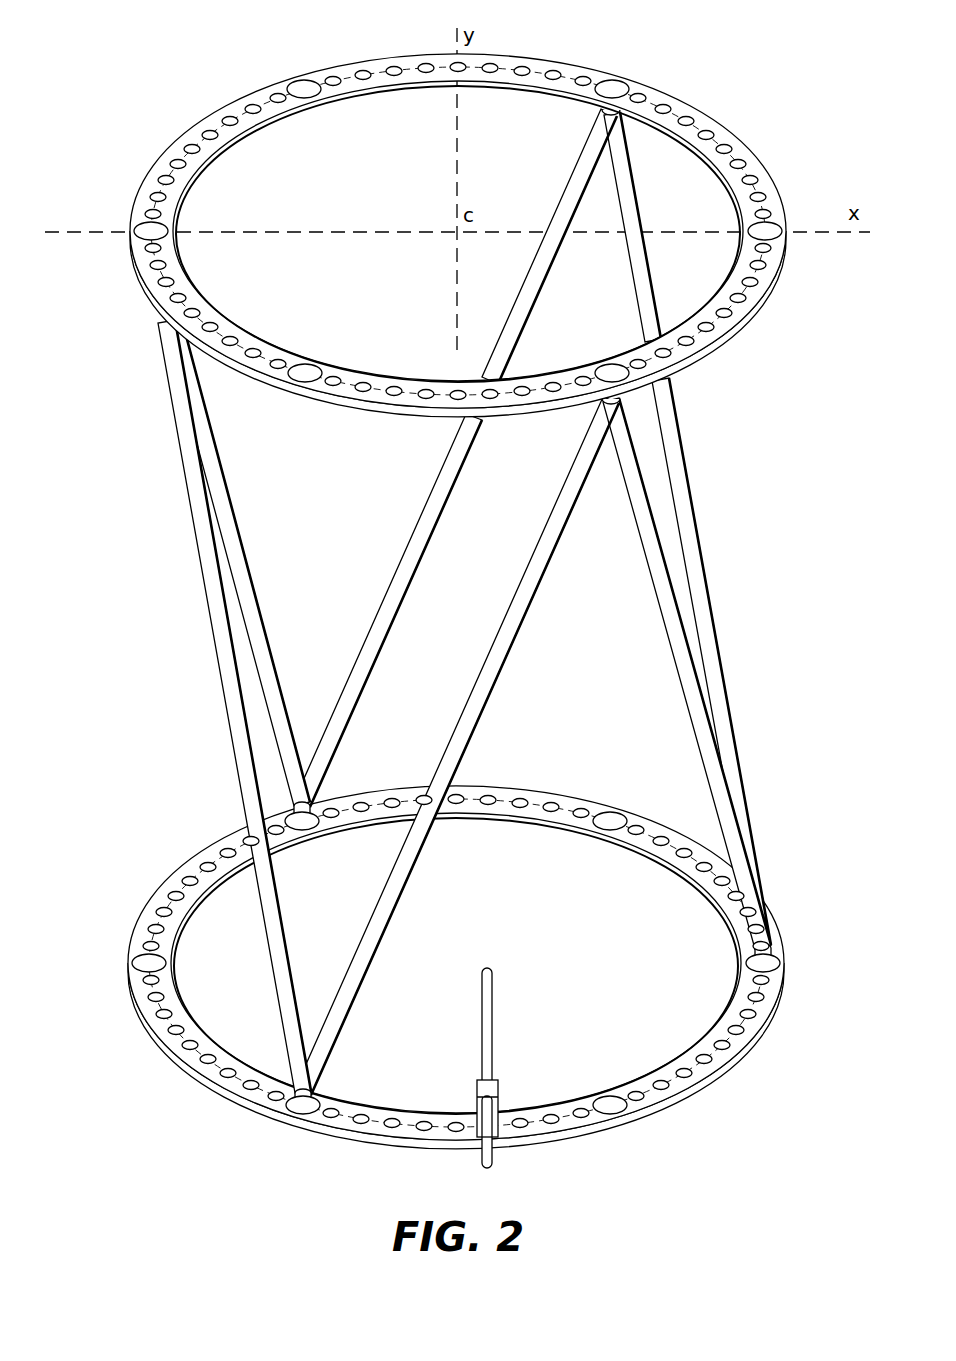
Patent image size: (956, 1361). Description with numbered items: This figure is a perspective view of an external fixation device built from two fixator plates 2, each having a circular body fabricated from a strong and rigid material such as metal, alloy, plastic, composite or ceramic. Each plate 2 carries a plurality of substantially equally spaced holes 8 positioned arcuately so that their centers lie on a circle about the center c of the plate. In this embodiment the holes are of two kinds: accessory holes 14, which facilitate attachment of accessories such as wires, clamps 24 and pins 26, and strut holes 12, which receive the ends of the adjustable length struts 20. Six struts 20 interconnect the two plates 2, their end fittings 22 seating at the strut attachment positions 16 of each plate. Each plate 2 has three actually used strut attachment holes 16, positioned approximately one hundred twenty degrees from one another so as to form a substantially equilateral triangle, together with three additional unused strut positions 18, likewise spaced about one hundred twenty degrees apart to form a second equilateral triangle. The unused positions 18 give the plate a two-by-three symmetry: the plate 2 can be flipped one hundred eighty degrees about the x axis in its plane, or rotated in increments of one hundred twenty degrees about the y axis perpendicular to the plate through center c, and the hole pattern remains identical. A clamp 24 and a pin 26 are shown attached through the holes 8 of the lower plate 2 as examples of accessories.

The plate 2 is at (445, 602).
The holes 8 is at (700, 1072).
The strut holes 12 is at (456, 603).
The accessory holes 14 is at (423, 1133).
The strut attachment positions 16 is at (303, 1125).
The unused strut positions 18 is at (605, 1120).
The adjustable length struts 20 is at (700, 598).
The strut end fitting 22 is at (294, 1108).
The clamps 24 is at (478, 1082).
The pins 26 is at (492, 1005).